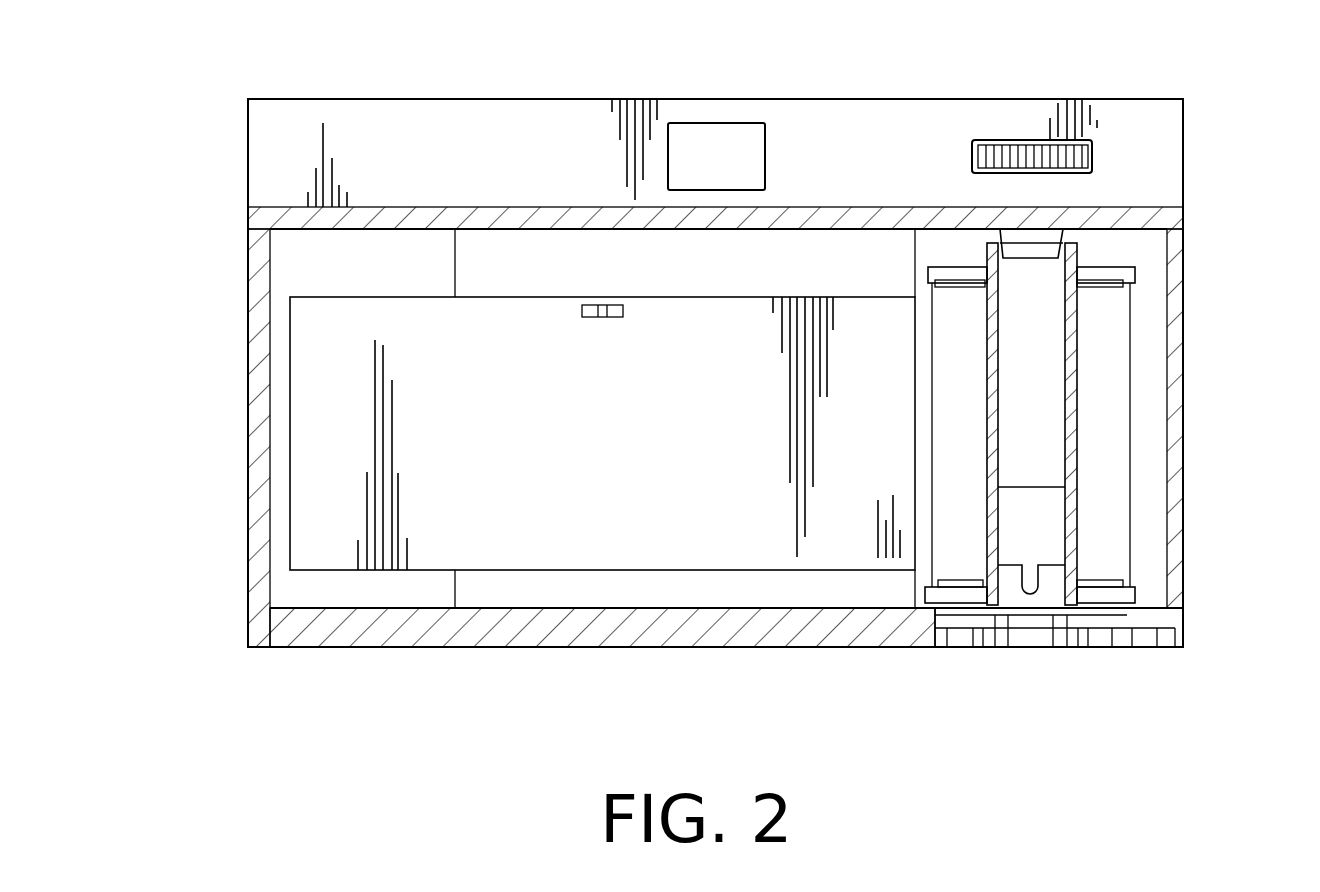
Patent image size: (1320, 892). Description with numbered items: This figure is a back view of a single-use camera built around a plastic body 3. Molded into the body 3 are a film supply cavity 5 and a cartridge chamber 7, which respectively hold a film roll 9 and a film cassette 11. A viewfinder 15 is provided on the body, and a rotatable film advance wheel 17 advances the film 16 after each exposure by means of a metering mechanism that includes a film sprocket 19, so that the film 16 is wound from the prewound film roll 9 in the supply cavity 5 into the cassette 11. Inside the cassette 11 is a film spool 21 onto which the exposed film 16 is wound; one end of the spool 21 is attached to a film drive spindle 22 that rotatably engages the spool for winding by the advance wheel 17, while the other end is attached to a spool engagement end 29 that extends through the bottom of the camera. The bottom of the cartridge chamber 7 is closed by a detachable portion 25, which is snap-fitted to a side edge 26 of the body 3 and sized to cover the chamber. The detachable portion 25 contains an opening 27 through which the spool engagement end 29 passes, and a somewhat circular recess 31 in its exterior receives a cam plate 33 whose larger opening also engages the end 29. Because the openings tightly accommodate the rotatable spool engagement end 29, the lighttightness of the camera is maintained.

The plastic body 3 is at (705, 648).
The film supply cavity 5 is at (288, 285).
The cartridge chamber 7 is at (1140, 510).
The film roll 9 is at (320, 353).
The film cassette 11 is at (1110, 320).
The viewfinder 15 is at (702, 137).
The film 16 is at (690, 432).
The film advance wheel 17 is at (1013, 150).
The film sprocket 19 is at (600, 317).
The film spool 21 is at (1047, 377).
The film drive spindle 22 is at (1048, 237).
The detachable portion 25 is at (1178, 630).
The side edge 26 is at (943, 645).
The opening 27 is at (993, 648).
The spool engagement end 29 is at (1012, 593).
The recess 31 is at (1180, 647).
The cam plate 33 is at (1133, 635).